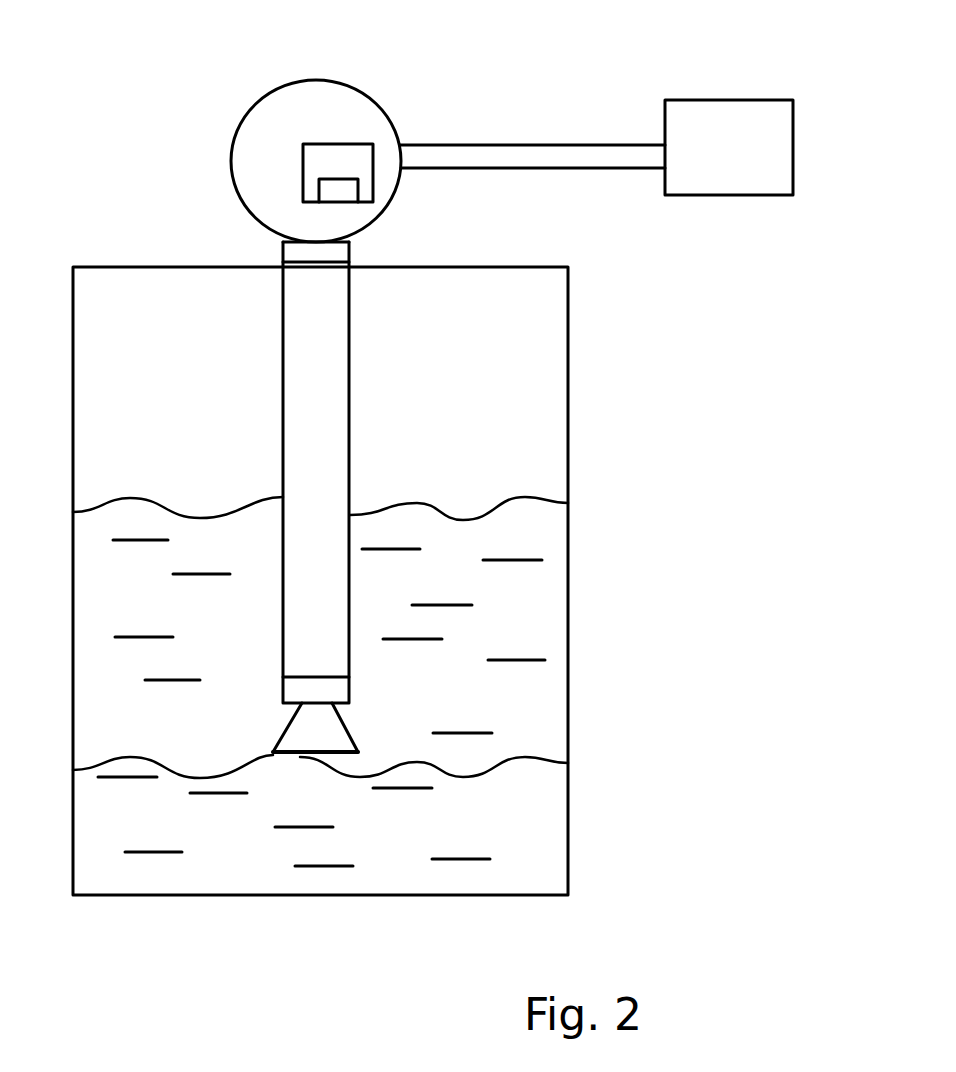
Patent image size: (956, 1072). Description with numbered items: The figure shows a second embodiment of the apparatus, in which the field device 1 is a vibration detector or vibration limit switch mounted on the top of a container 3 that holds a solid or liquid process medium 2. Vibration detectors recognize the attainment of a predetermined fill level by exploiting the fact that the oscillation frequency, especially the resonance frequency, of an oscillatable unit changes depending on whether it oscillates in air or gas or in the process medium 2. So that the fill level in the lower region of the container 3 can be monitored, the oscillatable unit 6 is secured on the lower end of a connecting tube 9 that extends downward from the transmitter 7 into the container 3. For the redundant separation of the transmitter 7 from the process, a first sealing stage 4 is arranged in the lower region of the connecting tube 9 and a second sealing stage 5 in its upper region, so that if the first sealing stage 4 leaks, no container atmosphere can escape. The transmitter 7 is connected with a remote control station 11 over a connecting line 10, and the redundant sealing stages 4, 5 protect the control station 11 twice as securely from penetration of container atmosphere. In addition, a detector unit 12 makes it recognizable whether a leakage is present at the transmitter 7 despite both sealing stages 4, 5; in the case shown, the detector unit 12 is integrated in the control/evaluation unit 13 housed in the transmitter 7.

The fill level measuring device 1 is at (405, 287).
The process medium 2 is at (440, 838).
The container 3 is at (568, 492).
The first sealing stage 4 is at (333, 689).
The second sealing stage 5 is at (333, 253).
The oscillatable unit 6 is at (333, 727).
The transmitter 7 is at (279, 107).
The connecting tube 9 is at (333, 437).
The connecting line 10 is at (545, 140).
The control station 11 is at (716, 161).
The detector unit 12 is at (345, 188).
The control/evaluation unit 13 is at (347, 160).